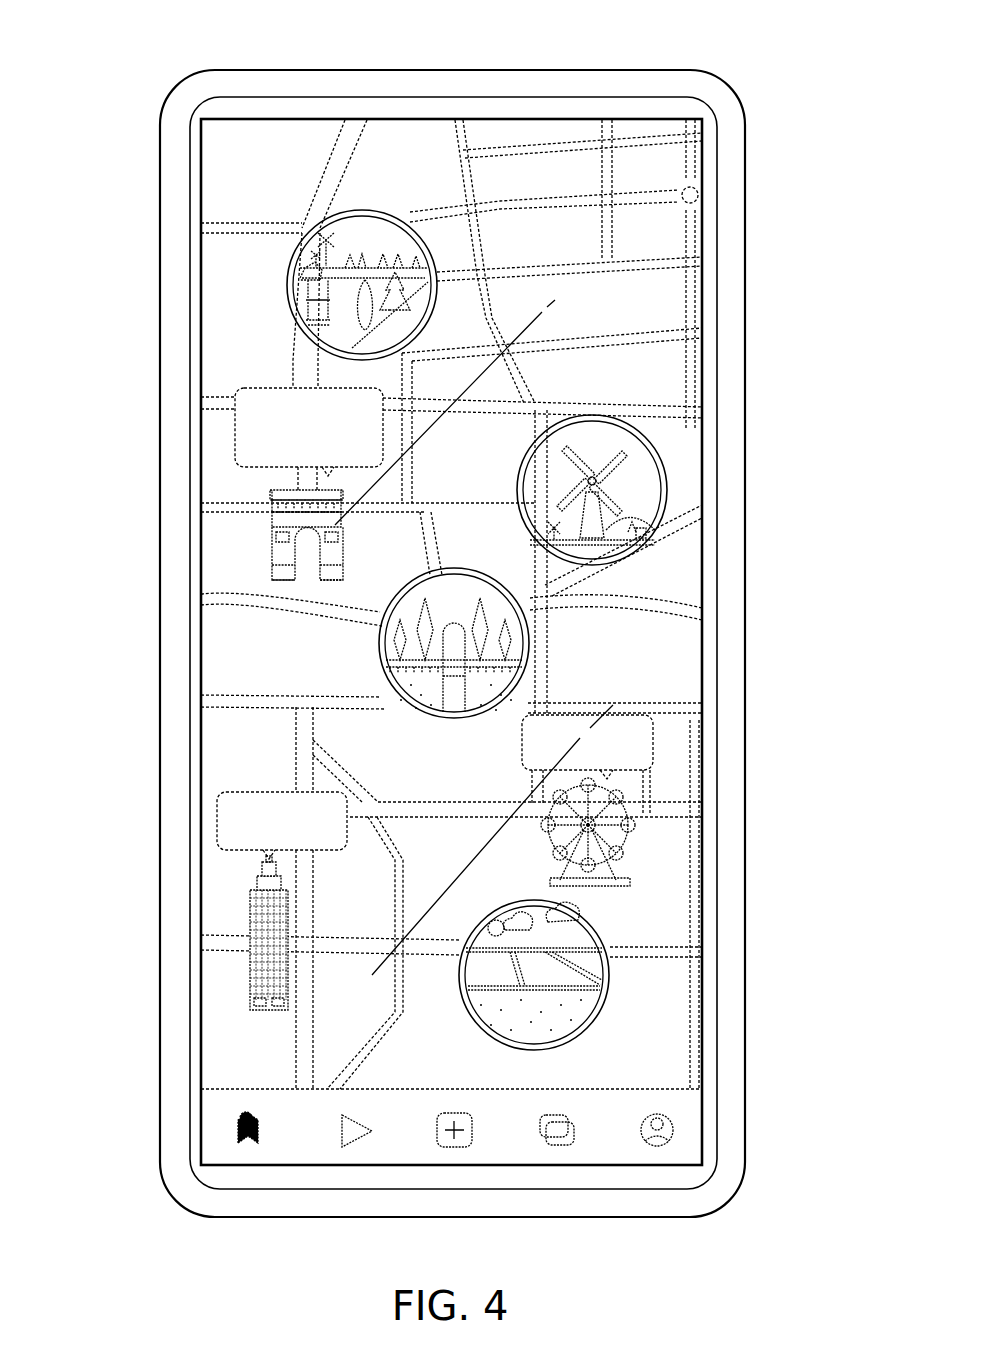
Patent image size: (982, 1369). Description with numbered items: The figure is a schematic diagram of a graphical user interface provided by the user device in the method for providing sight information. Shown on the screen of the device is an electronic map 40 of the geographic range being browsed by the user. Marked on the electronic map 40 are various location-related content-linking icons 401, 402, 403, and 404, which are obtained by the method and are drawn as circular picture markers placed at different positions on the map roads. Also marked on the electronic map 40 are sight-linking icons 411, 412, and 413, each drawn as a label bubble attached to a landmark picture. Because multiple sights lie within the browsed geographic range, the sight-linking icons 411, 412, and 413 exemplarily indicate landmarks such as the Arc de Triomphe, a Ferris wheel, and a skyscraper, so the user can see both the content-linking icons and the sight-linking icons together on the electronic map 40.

The electronic map 40 is at (419, 130).
The location-related content-linking icon 401 is at (288, 288).
The location-related content-linking icon 402 is at (668, 470).
The location-related content-linking icon 403 is at (452, 720).
The location-related content-linking icon 404 is at (610, 1006).
The sight-linking icon 411 is at (235, 430).
The sight-linking icon 412 is at (655, 745).
The sight-linking icon 413 is at (217, 827).